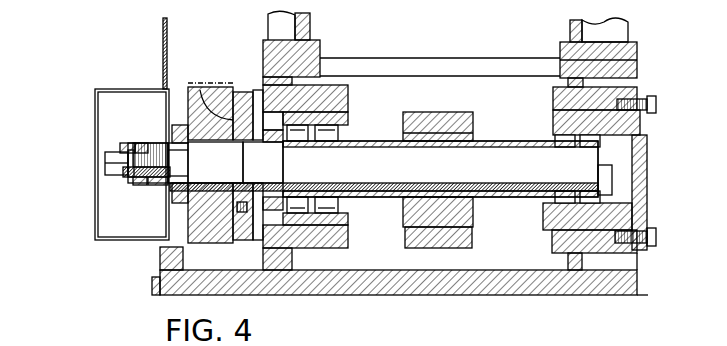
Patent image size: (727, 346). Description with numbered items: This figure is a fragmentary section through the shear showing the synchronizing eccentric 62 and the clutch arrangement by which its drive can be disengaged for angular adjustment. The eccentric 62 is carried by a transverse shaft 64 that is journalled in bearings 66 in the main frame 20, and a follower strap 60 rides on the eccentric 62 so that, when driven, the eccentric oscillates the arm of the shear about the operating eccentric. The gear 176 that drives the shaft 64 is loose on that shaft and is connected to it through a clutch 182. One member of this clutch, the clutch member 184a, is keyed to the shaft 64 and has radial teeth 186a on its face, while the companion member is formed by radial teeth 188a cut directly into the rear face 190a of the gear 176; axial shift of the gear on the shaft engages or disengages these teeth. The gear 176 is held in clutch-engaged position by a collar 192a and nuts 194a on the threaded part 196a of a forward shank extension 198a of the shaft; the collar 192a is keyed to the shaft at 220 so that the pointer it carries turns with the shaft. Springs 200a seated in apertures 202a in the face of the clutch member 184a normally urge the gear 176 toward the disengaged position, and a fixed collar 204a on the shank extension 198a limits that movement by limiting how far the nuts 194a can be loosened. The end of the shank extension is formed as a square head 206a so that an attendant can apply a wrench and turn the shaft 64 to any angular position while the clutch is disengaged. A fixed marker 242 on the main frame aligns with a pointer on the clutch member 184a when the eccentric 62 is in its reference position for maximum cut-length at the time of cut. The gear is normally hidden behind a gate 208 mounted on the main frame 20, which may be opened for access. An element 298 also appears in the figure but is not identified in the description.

The main frame 20 is at (640, 52).
The follower strap 60 is at (453, 247).
The synchronizing eccentric 62 is at (468, 212).
The transverse shaft 64 is at (516, 175).
The bearings 66 is at (328, 141).
The gear 176 is at (222, 110).
The clutch 182 is at (240, 242).
The clutch member 184a is at (252, 240).
The radial teeth 186a is at (257, 92).
The radial teeth 188a is at (236, 240).
The rear face 190a is at (198, 113).
The collar 192a is at (176, 204).
The nuts 194a is at (148, 186).
The threaded part 196a is at (148, 143).
The forward shank extension 198a is at (126, 150).
The springs 200a is at (222, 141).
The apertures 202a is at (257, 142).
The fixed collar 204a is at (130, 177).
The head 206a is at (105, 167).
The gate 208 is at (148, 89).
The key 220 is at (184, 176).
The fixed marker 242 is at (263, 62).
The ring 298 is at (257, 112).